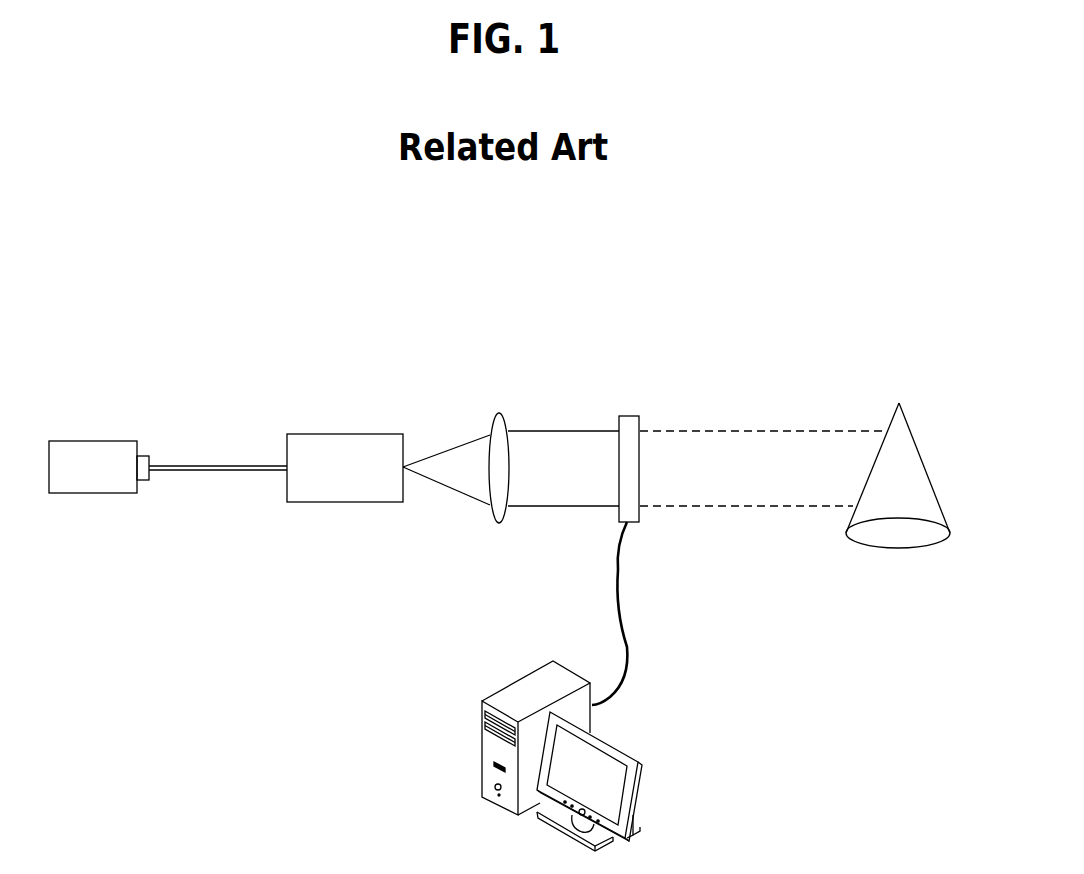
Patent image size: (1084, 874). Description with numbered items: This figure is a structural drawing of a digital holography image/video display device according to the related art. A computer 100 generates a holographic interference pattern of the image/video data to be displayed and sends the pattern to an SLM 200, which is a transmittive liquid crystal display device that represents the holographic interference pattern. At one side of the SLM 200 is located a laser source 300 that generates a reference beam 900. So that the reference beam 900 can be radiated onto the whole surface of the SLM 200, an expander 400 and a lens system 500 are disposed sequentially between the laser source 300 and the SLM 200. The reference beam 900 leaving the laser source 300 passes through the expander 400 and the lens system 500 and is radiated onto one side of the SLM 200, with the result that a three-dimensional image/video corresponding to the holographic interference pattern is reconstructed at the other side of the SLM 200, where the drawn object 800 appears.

The computer 100 is at (481, 746).
The SLM 200 is at (630, 415).
The laser source 300 is at (90, 494).
The expander 400 is at (345, 503).
The lens system 500 is at (498, 524).
The cone target 800 is at (898, 549).
The reference beam 900 is at (185, 462).